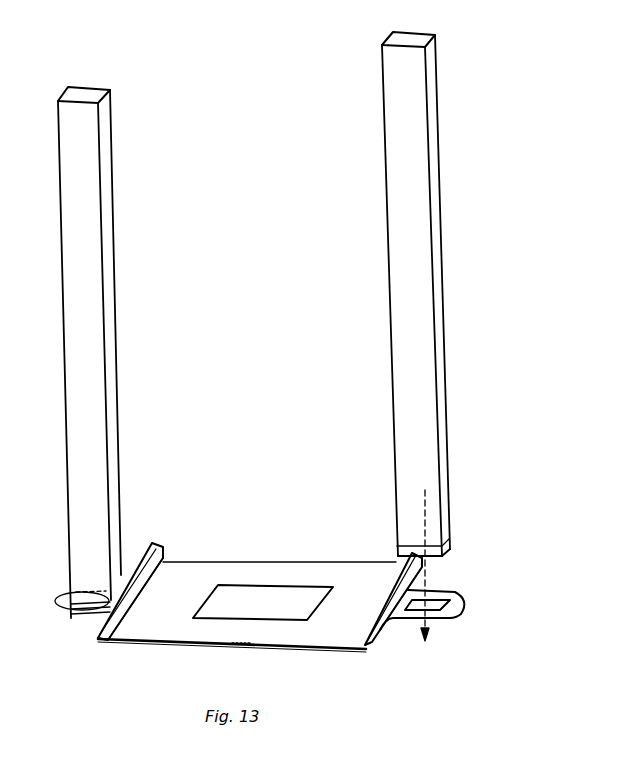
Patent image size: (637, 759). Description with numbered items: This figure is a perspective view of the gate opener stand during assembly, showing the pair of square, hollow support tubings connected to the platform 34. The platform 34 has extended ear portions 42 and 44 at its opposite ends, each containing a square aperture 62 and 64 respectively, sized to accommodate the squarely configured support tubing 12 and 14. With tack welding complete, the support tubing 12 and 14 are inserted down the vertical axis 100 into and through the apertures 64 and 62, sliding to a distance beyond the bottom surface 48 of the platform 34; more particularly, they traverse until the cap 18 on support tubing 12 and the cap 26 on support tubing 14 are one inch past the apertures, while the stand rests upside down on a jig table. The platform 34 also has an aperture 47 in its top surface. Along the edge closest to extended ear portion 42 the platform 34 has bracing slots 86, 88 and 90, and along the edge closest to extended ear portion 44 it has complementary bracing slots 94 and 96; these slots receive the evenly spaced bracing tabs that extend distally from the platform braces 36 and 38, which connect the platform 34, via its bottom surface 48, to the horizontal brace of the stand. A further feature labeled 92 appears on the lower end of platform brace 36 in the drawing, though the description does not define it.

The support tubing 12 is at (443, 325).
The support tubing 14 is at (64, 348).
The cap 18 is at (446, 557).
The cap 26 is at (88, 618).
The platform 34 is at (186, 649).
The platform brace 36 is at (393, 583).
The platform brace 38 is at (134, 566).
The extended ear portion 42 is at (56, 598).
The extended ear portion 44 is at (462, 598).
The aperture 47 is at (255, 604).
The bottom surface 48 is at (241, 633).
The aperture 62 is at (84, 612).
The aperture 64 is at (443, 614).
The bracing slot 86 is at (108, 634).
The bracing slot 88 is at (133, 600).
The bracing slot 90 is at (158, 563).
The flange lower end 92 is at (368, 648).
The bracing slot 94 is at (394, 607).
The bracing slot 96 is at (412, 557).
The vertical axis 100 is at (420, 632).